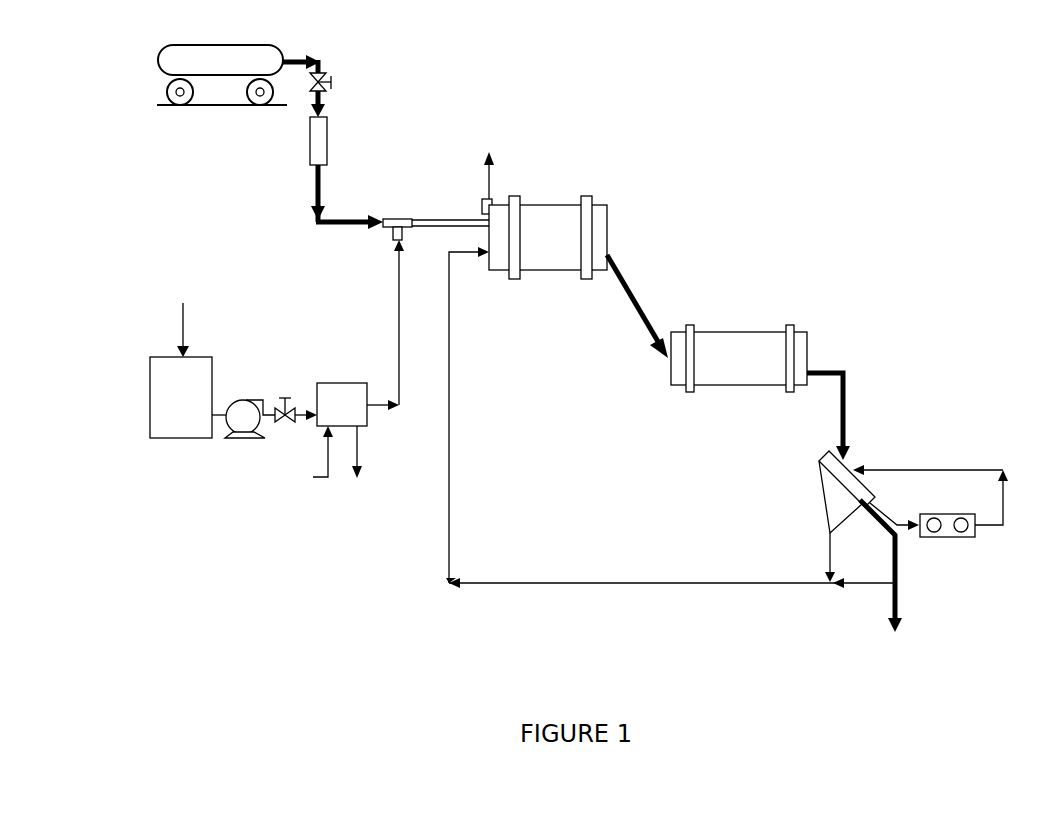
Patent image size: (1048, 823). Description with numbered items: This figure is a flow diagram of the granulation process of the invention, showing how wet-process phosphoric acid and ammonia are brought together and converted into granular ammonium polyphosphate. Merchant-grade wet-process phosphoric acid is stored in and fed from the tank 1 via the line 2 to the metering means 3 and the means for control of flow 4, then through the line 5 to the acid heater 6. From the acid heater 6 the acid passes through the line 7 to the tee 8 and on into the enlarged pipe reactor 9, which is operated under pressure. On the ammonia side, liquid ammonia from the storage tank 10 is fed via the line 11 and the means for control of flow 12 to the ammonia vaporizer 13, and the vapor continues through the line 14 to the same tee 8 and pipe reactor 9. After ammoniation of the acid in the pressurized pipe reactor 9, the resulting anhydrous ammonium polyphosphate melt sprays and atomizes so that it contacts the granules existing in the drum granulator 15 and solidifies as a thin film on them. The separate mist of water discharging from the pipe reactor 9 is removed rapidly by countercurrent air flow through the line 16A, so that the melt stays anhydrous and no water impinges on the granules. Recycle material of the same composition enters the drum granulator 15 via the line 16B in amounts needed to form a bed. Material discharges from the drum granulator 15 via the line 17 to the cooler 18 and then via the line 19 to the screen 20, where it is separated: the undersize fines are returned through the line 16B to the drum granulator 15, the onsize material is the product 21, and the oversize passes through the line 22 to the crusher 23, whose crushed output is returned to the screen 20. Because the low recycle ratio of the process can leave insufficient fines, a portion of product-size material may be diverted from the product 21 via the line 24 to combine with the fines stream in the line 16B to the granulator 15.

The tank 1 is at (177, 376).
The line 2 is at (230, 398).
The metering means 3 is at (250, 402).
The means for control of flow 4 is at (279, 389).
The line 5 is at (302, 427).
The acid heater 6 is at (318, 422).
The line 7 is at (385, 325).
The tee 8 is at (398, 219).
The pipe reactor 9 is at (450, 203).
The storage tank 10 is at (206, 66).
The line 11 is at (308, 48).
The means for control of flow 12 is at (337, 81).
The ammonia vaporizer 13 is at (372, 128).
The line 14 is at (347, 197).
The drum granulator 15 is at (544, 237).
The line 16A is at (510, 183).
The line 16B is at (470, 417).
The line 17 is at (637, 306).
The cooler 18 is at (739, 359).
The line 19 is at (850, 412).
The screen 20 is at (810, 504).
The product 21 is at (893, 577).
The line 22 is at (894, 507).
The crusher 23 is at (937, 515).
The line 24 is at (671, 575).